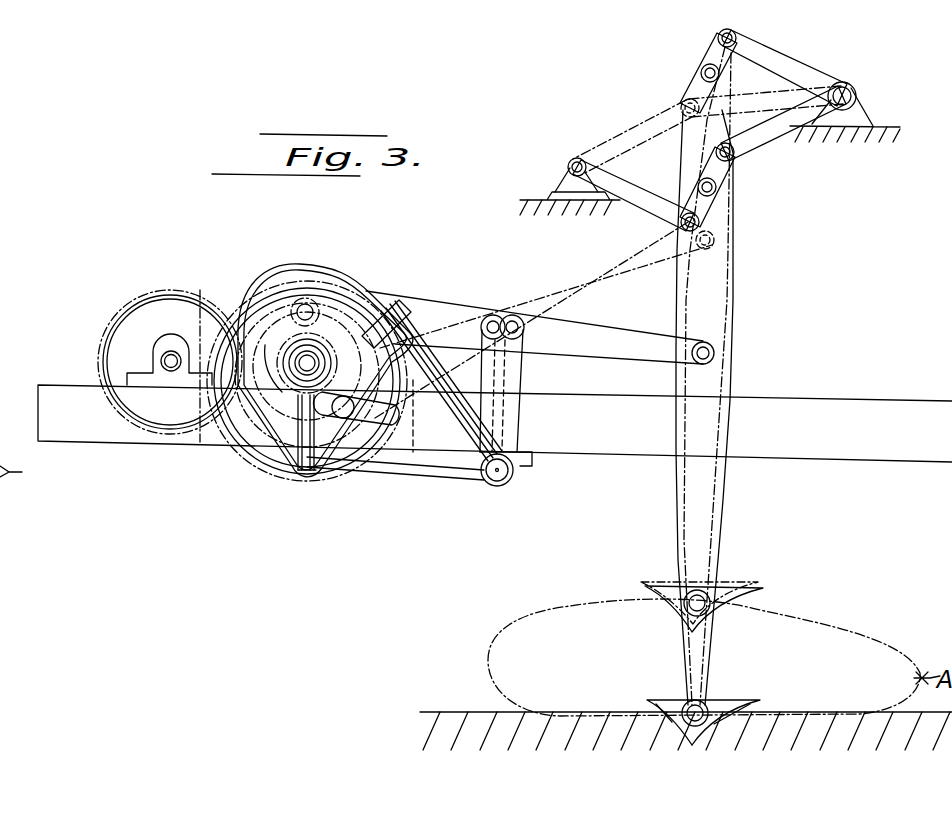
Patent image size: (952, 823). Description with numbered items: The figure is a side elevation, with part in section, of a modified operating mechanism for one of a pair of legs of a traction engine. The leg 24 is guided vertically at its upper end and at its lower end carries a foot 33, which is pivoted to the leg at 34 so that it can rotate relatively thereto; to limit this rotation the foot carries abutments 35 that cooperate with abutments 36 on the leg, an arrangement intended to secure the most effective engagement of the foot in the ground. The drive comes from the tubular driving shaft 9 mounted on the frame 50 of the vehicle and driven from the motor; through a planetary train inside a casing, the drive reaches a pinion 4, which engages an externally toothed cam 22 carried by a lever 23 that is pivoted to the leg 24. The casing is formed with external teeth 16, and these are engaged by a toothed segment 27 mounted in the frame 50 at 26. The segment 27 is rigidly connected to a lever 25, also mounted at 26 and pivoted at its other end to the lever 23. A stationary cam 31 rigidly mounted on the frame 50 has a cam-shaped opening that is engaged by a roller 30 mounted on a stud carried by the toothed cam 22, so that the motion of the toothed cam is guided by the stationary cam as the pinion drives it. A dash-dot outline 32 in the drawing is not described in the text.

The pinion 4 is at (292, 366).
The tubular driving shaft 9 is at (298, 377).
The external teeth 16 is at (309, 361).
The externally toothed cam 22 is at (290, 278).
The lever 23 is at (432, 308).
The leg 24 is at (720, 318).
The lever 25 is at (500, 372).
The mounting pivot 26 is at (513, 482).
The toothed segment 27 is at (330, 476).
The roller 30 is at (283, 298).
The stationary cam 31 is at (400, 304).
The path of foot 32 is at (783, 620).
The foot 33 is at (652, 702).
The foot pivot 34 is at (706, 702).
The abutments 35 is at (742, 702).
The abutments 36 is at (676, 702).
The frame 50 is at (850, 411).